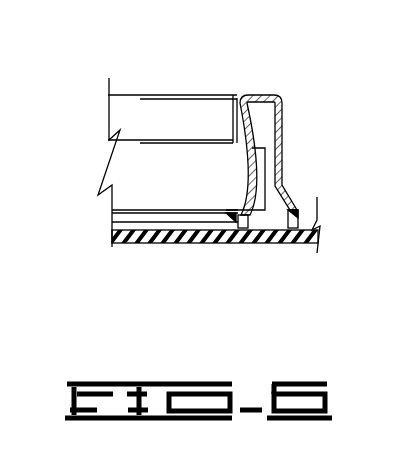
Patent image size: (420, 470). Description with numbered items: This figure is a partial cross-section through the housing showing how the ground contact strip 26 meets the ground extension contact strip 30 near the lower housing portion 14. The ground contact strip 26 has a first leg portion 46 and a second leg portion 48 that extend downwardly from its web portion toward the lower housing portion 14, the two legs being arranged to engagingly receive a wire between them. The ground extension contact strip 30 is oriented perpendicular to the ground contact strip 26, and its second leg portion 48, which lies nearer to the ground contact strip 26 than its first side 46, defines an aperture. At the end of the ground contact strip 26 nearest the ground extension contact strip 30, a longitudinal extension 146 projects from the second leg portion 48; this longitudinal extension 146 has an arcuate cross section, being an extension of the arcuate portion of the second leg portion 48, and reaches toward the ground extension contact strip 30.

The lower housing portion 14 is at (224, 238).
The ground contact strip 26 is at (140, 97).
The ground extension contact strip 30 is at (275, 136).
The first leg portion 46 is at (282, 113).
The second leg portion 48 is at (248, 92).
The longitudinal extension 146 is at (258, 158).